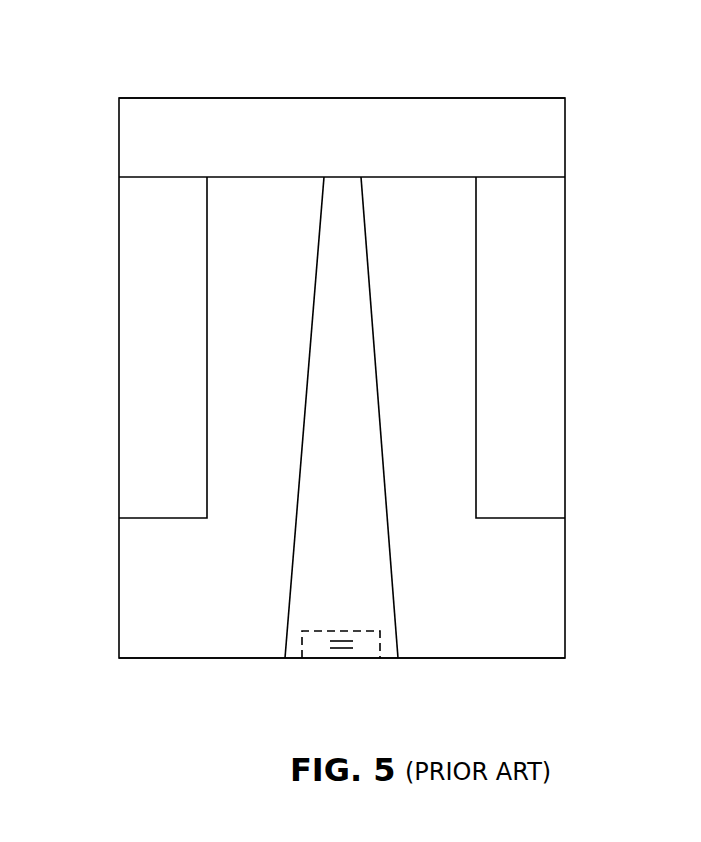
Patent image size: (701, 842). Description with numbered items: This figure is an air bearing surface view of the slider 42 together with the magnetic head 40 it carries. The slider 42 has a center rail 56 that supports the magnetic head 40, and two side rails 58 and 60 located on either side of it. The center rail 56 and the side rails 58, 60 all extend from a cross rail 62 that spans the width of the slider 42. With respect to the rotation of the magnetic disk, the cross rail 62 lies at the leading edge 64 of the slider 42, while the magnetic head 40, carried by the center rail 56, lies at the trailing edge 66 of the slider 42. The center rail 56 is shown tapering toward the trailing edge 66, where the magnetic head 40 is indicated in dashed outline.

The magnetic head 40 is at (320, 650).
The slider 42 is at (118, 607).
The center rail 56 is at (327, 293).
The side rail 58 is at (135, 260).
The side rail 60 is at (548, 260).
The cross rail 62 is at (263, 110).
The leading edge 64 is at (440, 98).
The trailing edge 66 is at (462, 660).